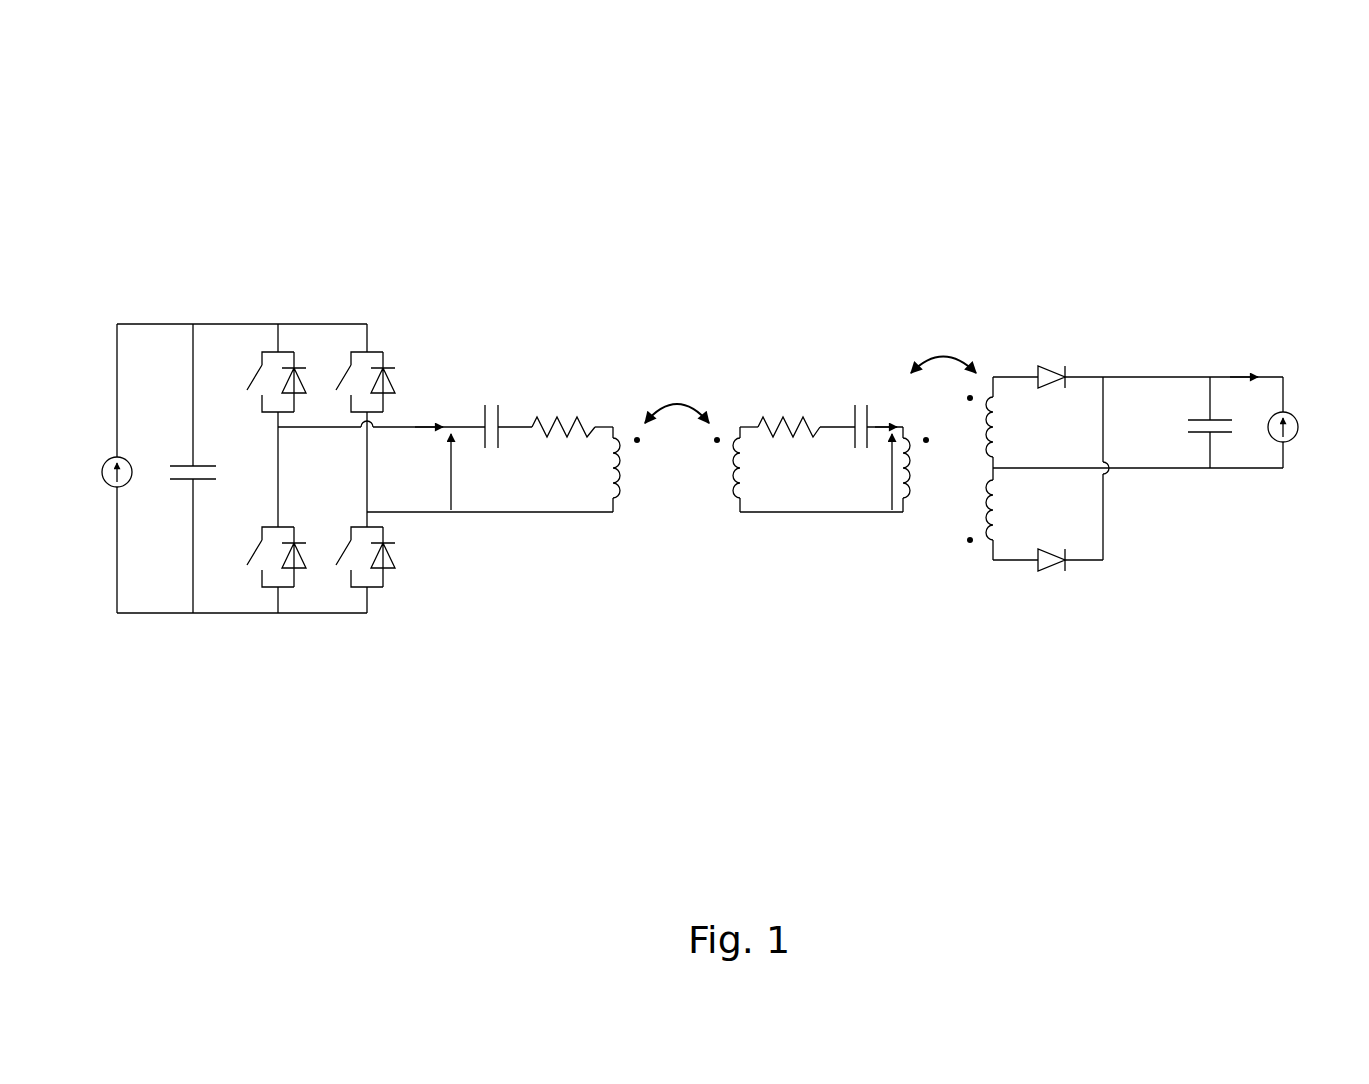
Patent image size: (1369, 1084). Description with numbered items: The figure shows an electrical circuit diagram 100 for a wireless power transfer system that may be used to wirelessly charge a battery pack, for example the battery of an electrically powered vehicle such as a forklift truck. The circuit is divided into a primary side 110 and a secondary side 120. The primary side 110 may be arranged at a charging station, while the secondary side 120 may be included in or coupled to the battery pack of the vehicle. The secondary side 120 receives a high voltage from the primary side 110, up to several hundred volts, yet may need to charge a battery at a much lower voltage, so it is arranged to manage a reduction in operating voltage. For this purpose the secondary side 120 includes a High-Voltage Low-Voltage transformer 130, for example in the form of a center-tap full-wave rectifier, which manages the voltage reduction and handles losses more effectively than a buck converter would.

The electrical circuit diagram 100 is at (377, 138).
The primary side 110 is at (118, 282).
The secondary side 120 is at (748, 255).
The High-Voltage Low-Voltage (HVLV) transformer 130 is at (1008, 570).